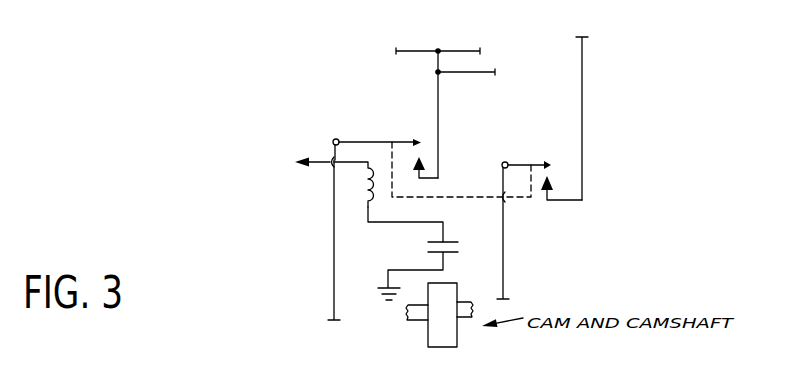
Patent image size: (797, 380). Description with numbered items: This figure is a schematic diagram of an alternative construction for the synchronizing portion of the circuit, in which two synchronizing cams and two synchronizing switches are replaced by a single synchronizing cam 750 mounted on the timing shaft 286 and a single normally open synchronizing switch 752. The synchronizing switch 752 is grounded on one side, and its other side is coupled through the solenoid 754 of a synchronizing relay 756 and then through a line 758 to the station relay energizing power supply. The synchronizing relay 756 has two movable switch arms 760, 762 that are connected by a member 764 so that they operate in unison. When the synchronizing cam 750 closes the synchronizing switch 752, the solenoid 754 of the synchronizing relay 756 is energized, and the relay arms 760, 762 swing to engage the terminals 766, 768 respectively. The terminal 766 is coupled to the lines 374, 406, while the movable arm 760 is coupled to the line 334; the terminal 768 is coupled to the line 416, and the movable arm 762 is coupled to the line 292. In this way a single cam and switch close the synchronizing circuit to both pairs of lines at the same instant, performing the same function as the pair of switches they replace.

The line 374 is at (424, 50).
The line 406 is at (457, 72).
The line 416 is at (582, 68).
The terminal 766 is at (421, 139).
The movable switch arm 760 is at (376, 141).
The line 758 is at (303, 158).
The line 334 is at (333, 290).
The synchronizing relay 756 is at (359, 210).
The solenoid 754 is at (381, 204).
The synchronizing switch 752 is at (428, 246).
The member 764 is at (473, 196).
The movable switch arm 762 is at (524, 164).
The terminal 768 is at (549, 176).
The line 292 is at (503, 270).
The synchronizing cam 750 is at (456, 330).
The timing shaft 286 is at (413, 320).